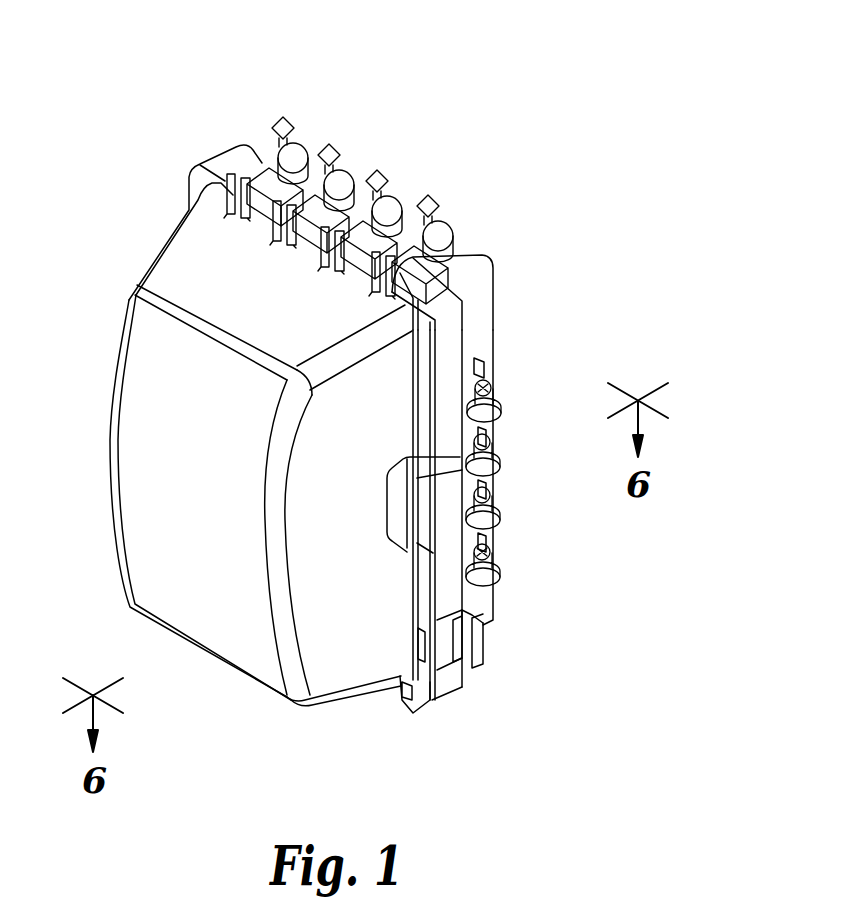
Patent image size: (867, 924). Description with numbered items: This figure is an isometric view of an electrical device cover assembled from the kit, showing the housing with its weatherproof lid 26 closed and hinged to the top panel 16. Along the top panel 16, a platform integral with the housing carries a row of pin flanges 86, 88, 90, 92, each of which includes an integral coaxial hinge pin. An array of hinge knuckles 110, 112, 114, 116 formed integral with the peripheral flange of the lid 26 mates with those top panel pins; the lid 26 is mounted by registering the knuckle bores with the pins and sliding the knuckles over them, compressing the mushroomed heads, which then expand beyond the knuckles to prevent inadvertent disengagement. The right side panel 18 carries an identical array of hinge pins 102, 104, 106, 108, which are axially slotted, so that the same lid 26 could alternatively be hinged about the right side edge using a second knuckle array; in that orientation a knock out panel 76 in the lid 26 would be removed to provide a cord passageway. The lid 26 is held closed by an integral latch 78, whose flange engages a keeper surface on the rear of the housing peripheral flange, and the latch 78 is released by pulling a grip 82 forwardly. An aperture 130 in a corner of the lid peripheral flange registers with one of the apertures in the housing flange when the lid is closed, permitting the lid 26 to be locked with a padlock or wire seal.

The top panel 16 is at (460, 254).
The right side panel 18 is at (482, 328).
The weatherproof lid 26 is at (153, 453).
The knock out panel 76 is at (437, 521).
The latch 78 is at (467, 648).
The grip 82 is at (483, 655).
The pin flange 86 is at (445, 245).
The pin flange 88 is at (390, 194).
The pin flange 90 is at (372, 190).
The pin flange 92 is at (303, 147).
The hinge pin 102 is at (490, 393).
The hinge pin 104 is at (492, 452).
The hinge pin 106 is at (492, 508).
The hinge pin 108 is at (492, 560).
The hinge knuckle 110 is at (440, 215).
The hinge knuckle 112 is at (372, 182).
The hinge knuckle 114 is at (325, 163).
The hinge knuckle 116 is at (281, 132).
The aperture 130 is at (442, 698).